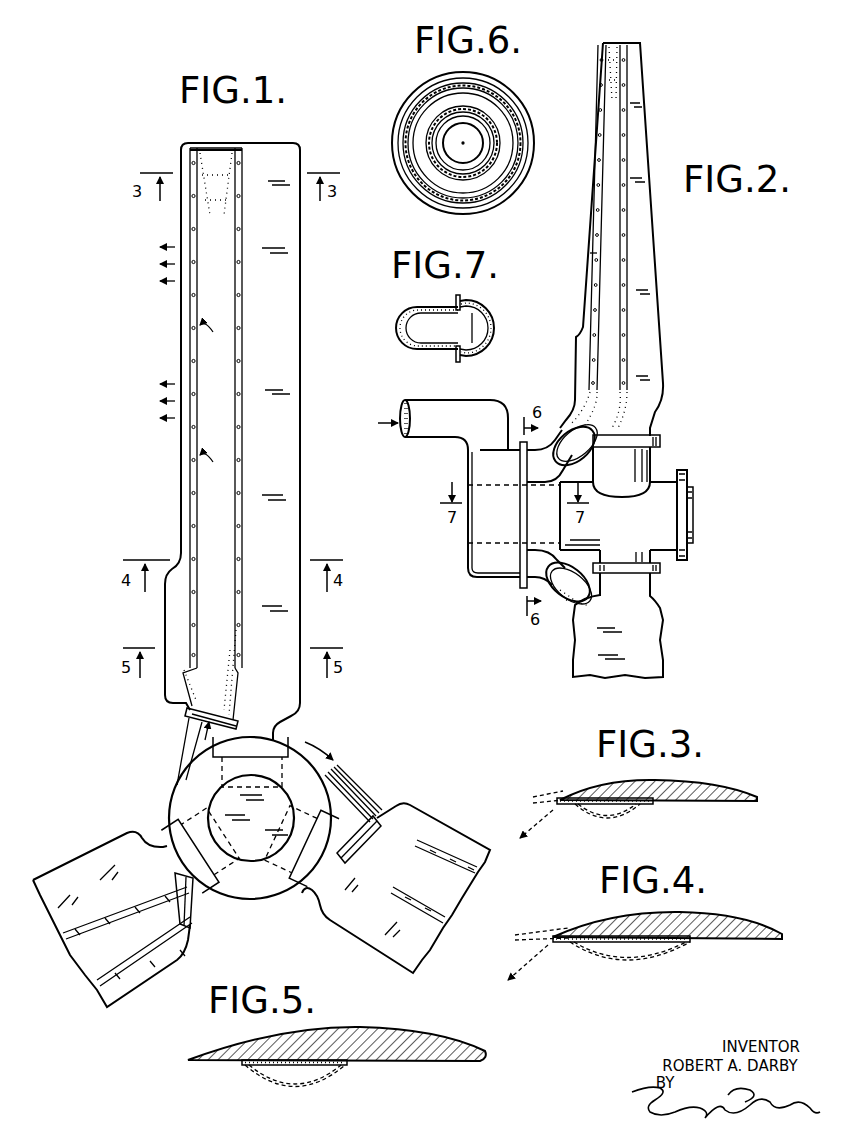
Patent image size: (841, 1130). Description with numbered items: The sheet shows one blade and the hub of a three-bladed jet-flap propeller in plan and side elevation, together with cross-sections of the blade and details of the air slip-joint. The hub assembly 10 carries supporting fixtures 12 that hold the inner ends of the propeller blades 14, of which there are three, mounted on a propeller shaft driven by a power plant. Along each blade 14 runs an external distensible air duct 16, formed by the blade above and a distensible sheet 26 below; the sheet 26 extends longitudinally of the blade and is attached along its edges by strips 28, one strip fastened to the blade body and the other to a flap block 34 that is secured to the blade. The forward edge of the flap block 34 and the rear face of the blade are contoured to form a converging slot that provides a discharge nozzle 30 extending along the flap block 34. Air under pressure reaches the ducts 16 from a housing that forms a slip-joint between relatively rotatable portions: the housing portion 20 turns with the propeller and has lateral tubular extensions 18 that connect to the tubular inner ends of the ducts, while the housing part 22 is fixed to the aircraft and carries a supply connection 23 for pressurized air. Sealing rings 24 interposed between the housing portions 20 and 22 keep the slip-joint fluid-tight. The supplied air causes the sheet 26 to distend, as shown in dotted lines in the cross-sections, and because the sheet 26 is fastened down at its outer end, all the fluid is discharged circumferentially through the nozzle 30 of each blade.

In FIG. 1, the hub assembly 10 is at (318, 786).
In FIG. 2, the hub assembly 10 is at (688, 506).
In FIG. 1, the supporting fixture 12 is at (192, 790).
In FIG. 2, the supporting fixture 12 is at (632, 466).
In FIG. 1, the propeller blade 14 is at (298, 504).
In FIG. 2, the propeller blade 14 is at (652, 340).
In FIG. 3, the propeller blade 14 is at (717, 785).
In FIG. 4, the propeller blade 14 is at (762, 935).
In FIG. 5, the propeller blade 14 is at (418, 1030).
In FIG. 1, the external distensible air duct 16 is at (208, 490).
In FIG. 2, the external distensible air duct 16 is at (612, 256).
In FIG. 3, the external distensible air duct 16 is at (640, 806).
In FIG. 4, the external distensible air duct 16 is at (622, 960).
In FIG. 5, the external distensible air duct 16 is at (338, 1071).
In FIG. 1, the lateral tubular extension 18 is at (190, 750).
In FIG. 2, the lateral tubular extension 18 is at (563, 430).
In FIG. 1, the housing portion 20 is at (266, 890).
In FIG. 2, the housing portion 20 is at (530, 508).
In FIG. 6, the housing portion 20 is at (483, 140).
In FIG. 7, the housing portion 20 is at (500, 333).
In FIG. 2, the housing part 22 is at (478, 566).
In FIG. 6, the housing part 22 is at (497, 162).
In FIG. 7, the housing part 22 is at (404, 340).
In FIG. 2, the supply connection 23 is at (448, 400).
In FIG. 6, the sealing ring 24 is at (505, 127).
In FIG. 7, the sealing ring 24 is at (470, 305).
In FIG. 1, the distensible sheet 26 is at (222, 432).
In FIG. 2, the distensible sheet 26 is at (616, 288).
In FIG. 3, the distensible sheet 26 is at (612, 805).
In FIG. 4, the distensible sheet 26 is at (665, 942).
In FIG. 5, the distensible sheet 26 is at (305, 1070).
In FIG. 1, the strip 28 is at (222, 146).
In FIG. 2, the strip 28 is at (627, 205).
In FIG. 3, the discharge nozzle 30 is at (563, 795).
In FIG. 4, the discharge nozzle 30 is at (570, 927).
In FIG. 1, the flap block 34 is at (179, 347).
In FIG. 2, the flap block 34 is at (581, 252).
In FIG. 3, the flap block 34 is at (568, 805).
In FIG. 4, the flap block 34 is at (566, 942).
In FIG. 5, the flap block 34 is at (294, 1062).